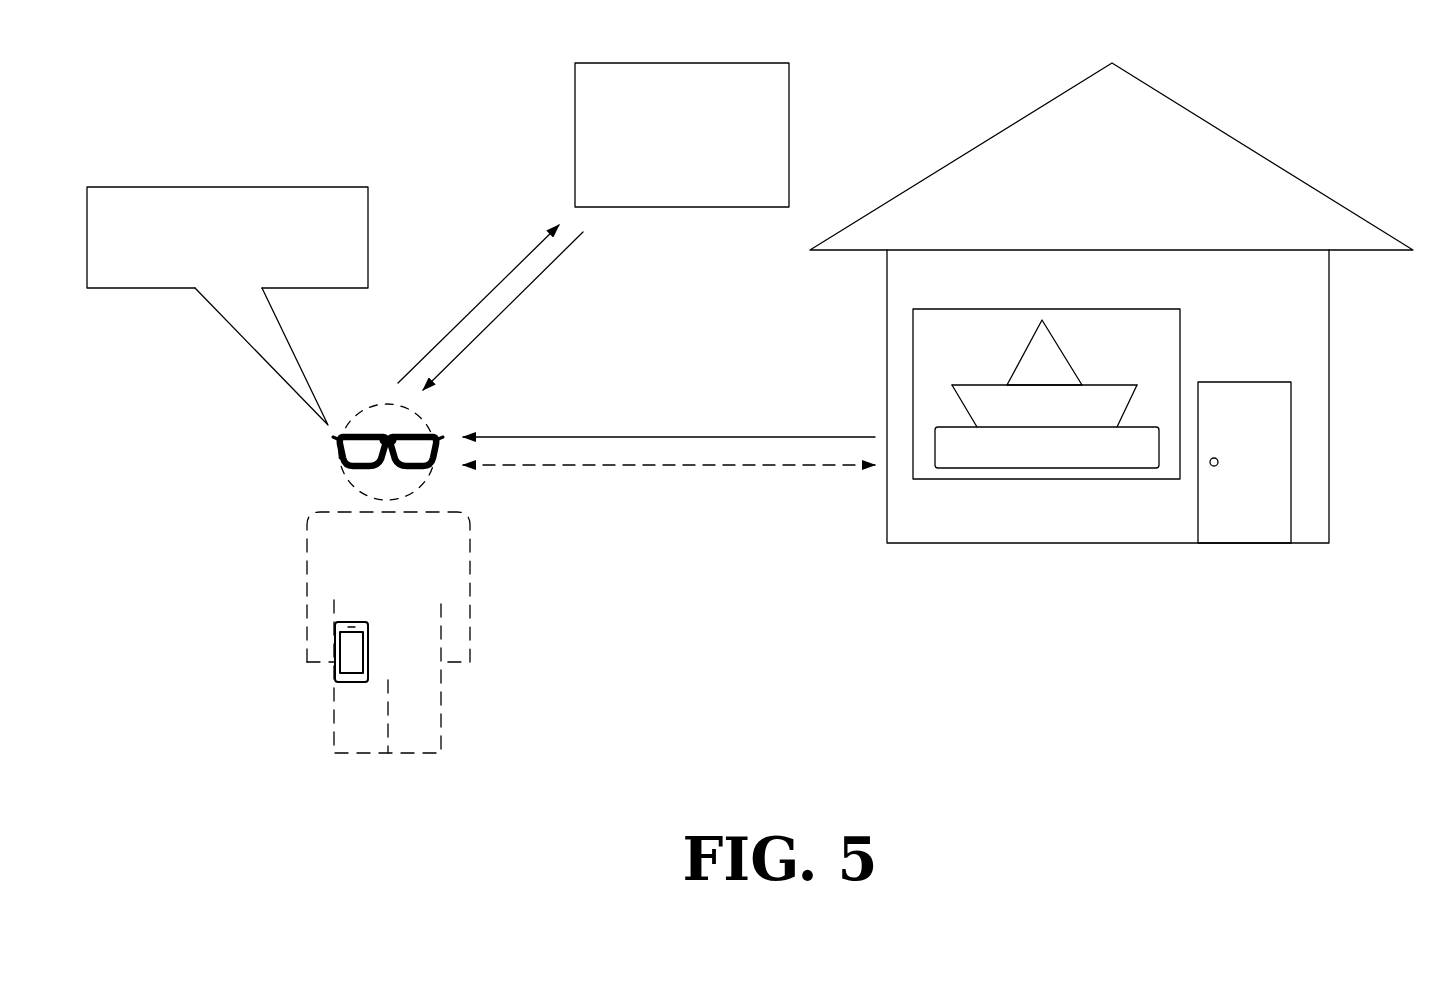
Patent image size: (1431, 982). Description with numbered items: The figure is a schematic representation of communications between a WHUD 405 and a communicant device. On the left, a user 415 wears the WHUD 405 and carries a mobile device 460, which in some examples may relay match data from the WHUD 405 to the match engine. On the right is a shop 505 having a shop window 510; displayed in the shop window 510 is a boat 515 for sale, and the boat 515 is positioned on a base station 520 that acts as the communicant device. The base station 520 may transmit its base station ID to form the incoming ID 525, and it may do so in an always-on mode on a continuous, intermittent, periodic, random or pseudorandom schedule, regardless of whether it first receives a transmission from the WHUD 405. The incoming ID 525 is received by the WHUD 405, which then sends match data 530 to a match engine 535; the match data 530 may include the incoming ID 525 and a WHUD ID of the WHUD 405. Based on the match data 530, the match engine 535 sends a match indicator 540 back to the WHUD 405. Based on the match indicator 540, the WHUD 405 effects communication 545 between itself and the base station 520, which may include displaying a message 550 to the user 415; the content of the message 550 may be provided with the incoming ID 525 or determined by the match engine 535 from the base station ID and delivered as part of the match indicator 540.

The WHUD 405 is at (333, 447).
The user 415 is at (318, 523).
The mobile device 460 is at (335, 672).
The shop 505 is at (972, 152).
The shop window 510 is at (1162, 480).
The boat 515 is at (1052, 417).
The base station 520 is at (958, 468).
The incoming ID 525 is at (778, 437).
The match data 530 is at (522, 263).
The match engine 535 is at (682, 135).
The match indicator 540 is at (495, 323).
The communication 545 is at (668, 468).
The message 550 is at (222, 187).